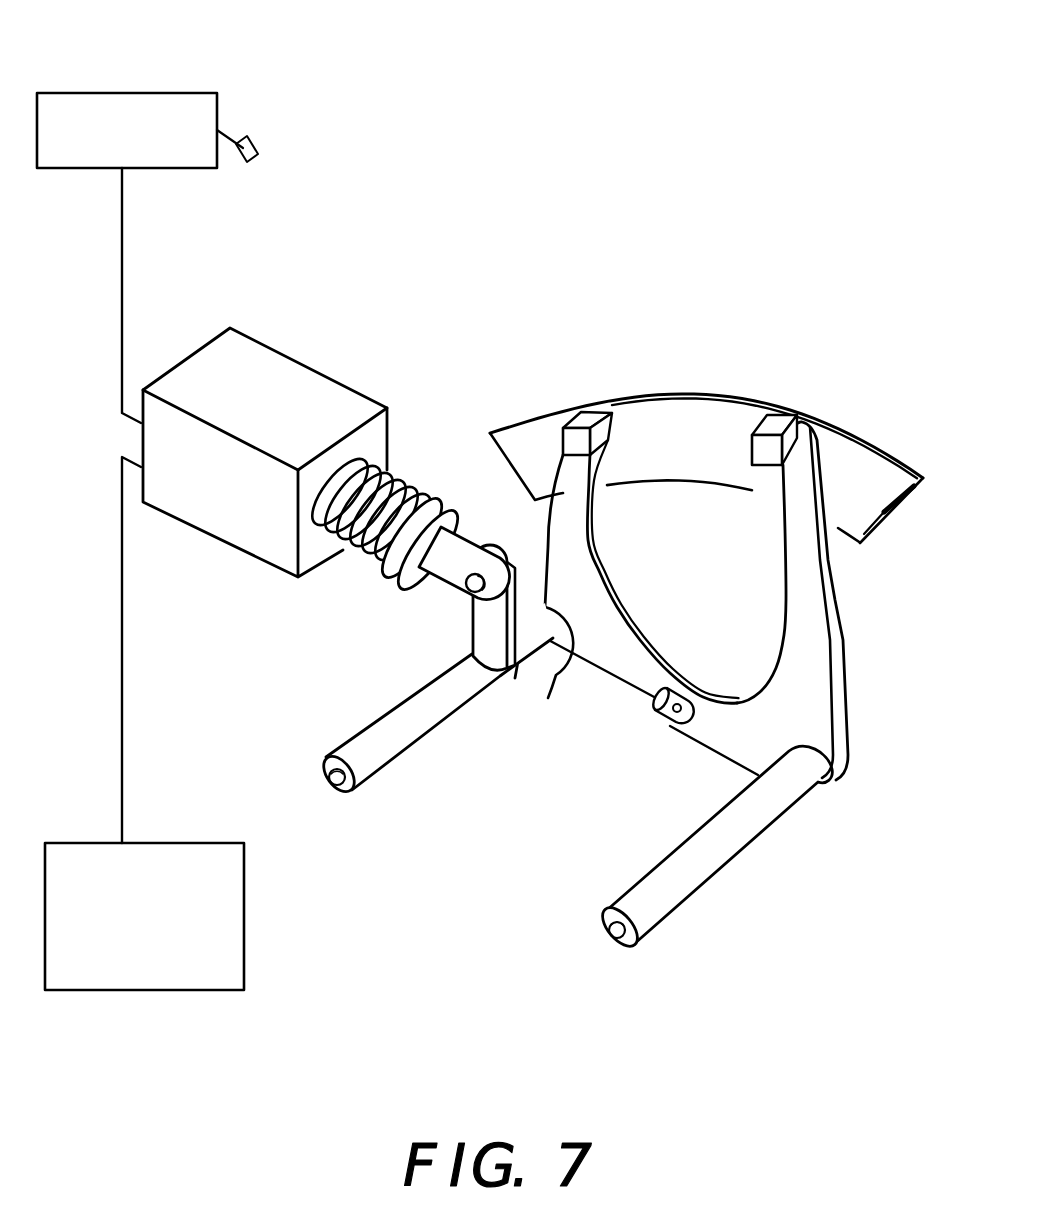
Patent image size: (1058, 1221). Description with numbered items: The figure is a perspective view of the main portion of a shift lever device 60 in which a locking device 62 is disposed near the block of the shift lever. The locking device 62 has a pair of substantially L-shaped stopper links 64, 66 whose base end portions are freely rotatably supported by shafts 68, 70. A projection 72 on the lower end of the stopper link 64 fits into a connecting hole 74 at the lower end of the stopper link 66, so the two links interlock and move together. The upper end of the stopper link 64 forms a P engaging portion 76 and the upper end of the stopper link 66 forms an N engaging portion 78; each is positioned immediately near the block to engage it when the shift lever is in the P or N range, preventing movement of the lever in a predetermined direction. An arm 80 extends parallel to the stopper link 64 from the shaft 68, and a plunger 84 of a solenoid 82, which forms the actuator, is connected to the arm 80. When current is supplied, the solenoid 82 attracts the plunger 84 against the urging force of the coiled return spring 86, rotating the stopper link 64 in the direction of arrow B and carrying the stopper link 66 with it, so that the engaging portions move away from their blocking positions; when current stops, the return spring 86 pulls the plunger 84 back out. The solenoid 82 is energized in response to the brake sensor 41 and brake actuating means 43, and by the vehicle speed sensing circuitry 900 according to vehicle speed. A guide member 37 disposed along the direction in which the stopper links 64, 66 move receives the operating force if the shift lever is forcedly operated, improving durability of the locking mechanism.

The guide member 37 is at (884, 528).
The brake sensor 41 is at (133, 93).
The brake actuating means 43 is at (238, 142).
The shift lever device 60 is at (541, 664).
The locking device 62 is at (608, 664).
The stopper link 64 is at (600, 558).
The stopper link 66 is at (840, 664).
The shaft 68 is at (385, 717).
The shaft 70 is at (652, 867).
The projection 72 is at (659, 711).
The connecting hole 74 is at (682, 688).
The P engaging portion 76 is at (571, 446).
The N engaging portion 78 is at (757, 452).
The arm 80 is at (474, 635).
The solenoid 82 is at (305, 366).
The plunger 84 is at (470, 537).
The return spring 86 is at (399, 477).
The vehicle speed sensing circuitry 900 is at (172, 990).
The arrow B is at (644, 691).